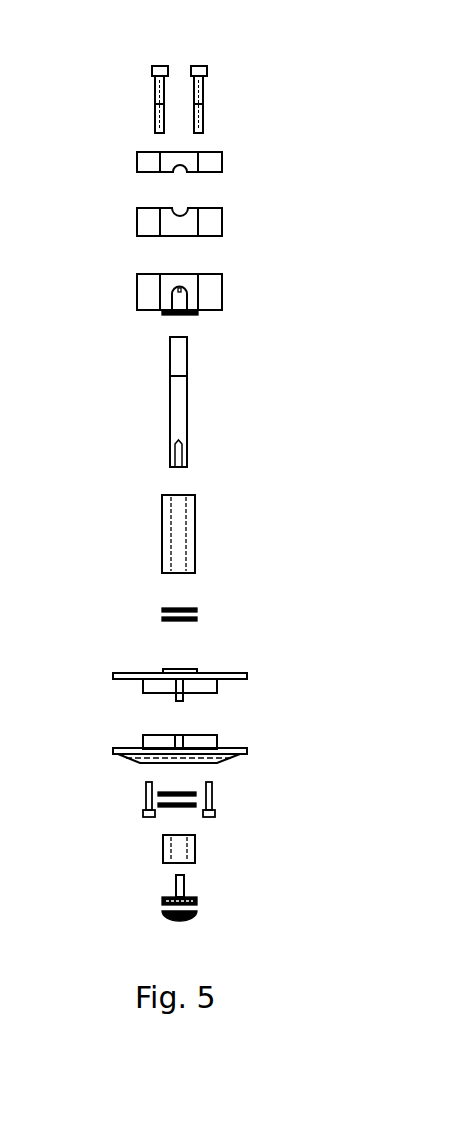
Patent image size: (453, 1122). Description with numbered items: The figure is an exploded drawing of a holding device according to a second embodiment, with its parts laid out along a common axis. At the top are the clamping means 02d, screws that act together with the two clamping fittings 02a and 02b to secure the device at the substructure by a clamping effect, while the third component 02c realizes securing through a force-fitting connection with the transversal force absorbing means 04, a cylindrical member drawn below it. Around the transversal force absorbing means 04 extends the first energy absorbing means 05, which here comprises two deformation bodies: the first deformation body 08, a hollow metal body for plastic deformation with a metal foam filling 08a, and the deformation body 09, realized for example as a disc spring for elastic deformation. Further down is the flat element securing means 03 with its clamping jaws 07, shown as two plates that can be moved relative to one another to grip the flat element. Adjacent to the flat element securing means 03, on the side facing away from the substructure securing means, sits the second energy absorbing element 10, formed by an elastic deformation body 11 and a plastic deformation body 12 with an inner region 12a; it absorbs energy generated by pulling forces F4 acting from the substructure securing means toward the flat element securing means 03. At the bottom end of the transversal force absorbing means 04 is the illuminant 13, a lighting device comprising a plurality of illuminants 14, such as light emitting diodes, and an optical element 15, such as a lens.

The clamping fitting 02a is at (135, 159).
The clamping fitting 02b is at (135, 222).
The third component 02c is at (135, 296).
The clamping means 02d is at (168, 63).
The flat element securing means 03 is at (180, 716).
The transversal force absorbing means 04 is at (170, 417).
The first energy absorbing means 05 is at (214, 481).
The clamping jaws 07 is at (248, 676).
The first deformation body 08 is at (185, 533).
The metal foam filling 08a is at (196, 513).
The deformation body 09 is at (160, 609).
The second energy absorbing element 10 is at (231, 818).
The elastic deformation body 11 is at (160, 793).
The plastic deformation body 12 is at (186, 846).
The spacer bore 12a is at (197, 848).
The illuminant 13 is at (195, 923).
The illuminants 14 is at (162, 902).
The optical element 15 is at (178, 925).
The pulling forces F4 is at (288, 415).